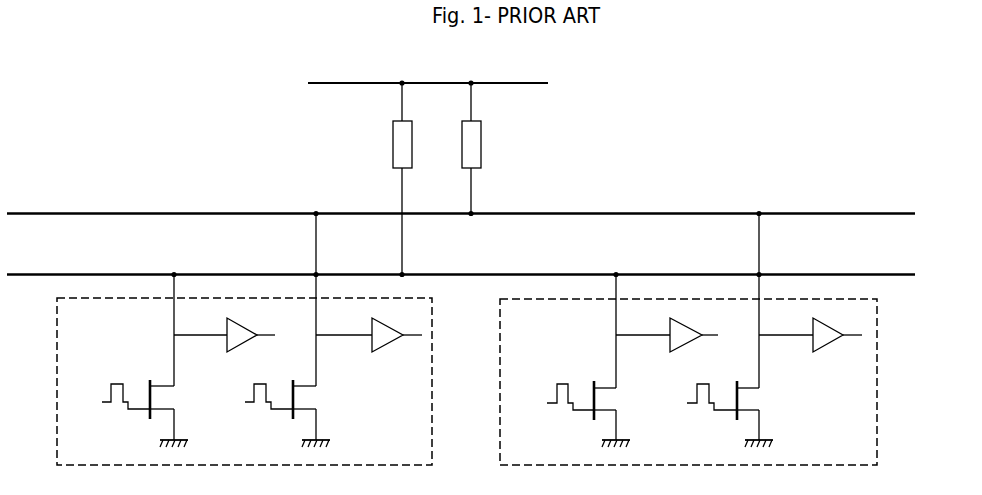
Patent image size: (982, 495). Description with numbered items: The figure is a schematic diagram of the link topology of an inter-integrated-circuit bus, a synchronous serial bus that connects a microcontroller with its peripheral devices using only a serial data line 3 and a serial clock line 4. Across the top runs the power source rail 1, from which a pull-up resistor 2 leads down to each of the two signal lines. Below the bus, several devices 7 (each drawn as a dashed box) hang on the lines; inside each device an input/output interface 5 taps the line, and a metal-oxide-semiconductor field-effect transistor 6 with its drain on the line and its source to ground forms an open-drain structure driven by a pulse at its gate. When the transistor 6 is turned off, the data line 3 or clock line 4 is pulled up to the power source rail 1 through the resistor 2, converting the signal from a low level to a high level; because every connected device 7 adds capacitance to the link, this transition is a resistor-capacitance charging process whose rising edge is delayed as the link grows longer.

The VDD supply rail 1 is at (406, 83).
The pull-up resistor RP 2 is at (436, 179).
The SDA bus line 3 is at (461, 200).
The SCL bus line 4 is at (461, 258).
The IO input buffer 5 is at (518, 343).
The MOS open-drain transistor 6 is at (437, 413).
The I2C device (Device 1) 7 is at (467, 381).